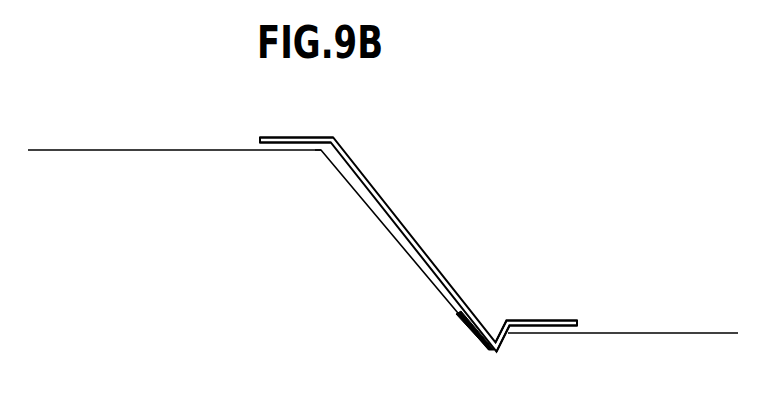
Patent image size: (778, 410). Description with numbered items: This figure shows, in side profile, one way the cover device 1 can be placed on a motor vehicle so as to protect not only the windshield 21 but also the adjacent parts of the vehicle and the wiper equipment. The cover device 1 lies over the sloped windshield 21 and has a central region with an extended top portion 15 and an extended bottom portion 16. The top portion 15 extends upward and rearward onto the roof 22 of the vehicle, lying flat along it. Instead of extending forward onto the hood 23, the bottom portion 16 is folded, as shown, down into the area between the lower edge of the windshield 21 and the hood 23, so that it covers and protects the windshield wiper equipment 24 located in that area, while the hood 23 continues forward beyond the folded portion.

The cover device 1 is at (440, 263).
The top portion 15 is at (305, 137).
The bottom portion 16 is at (547, 320).
The windshield 21 is at (322, 153).
The roof 22 is at (182, 148).
The hood 23 is at (633, 330).
The windshield wiper equipment 24 is at (490, 350).